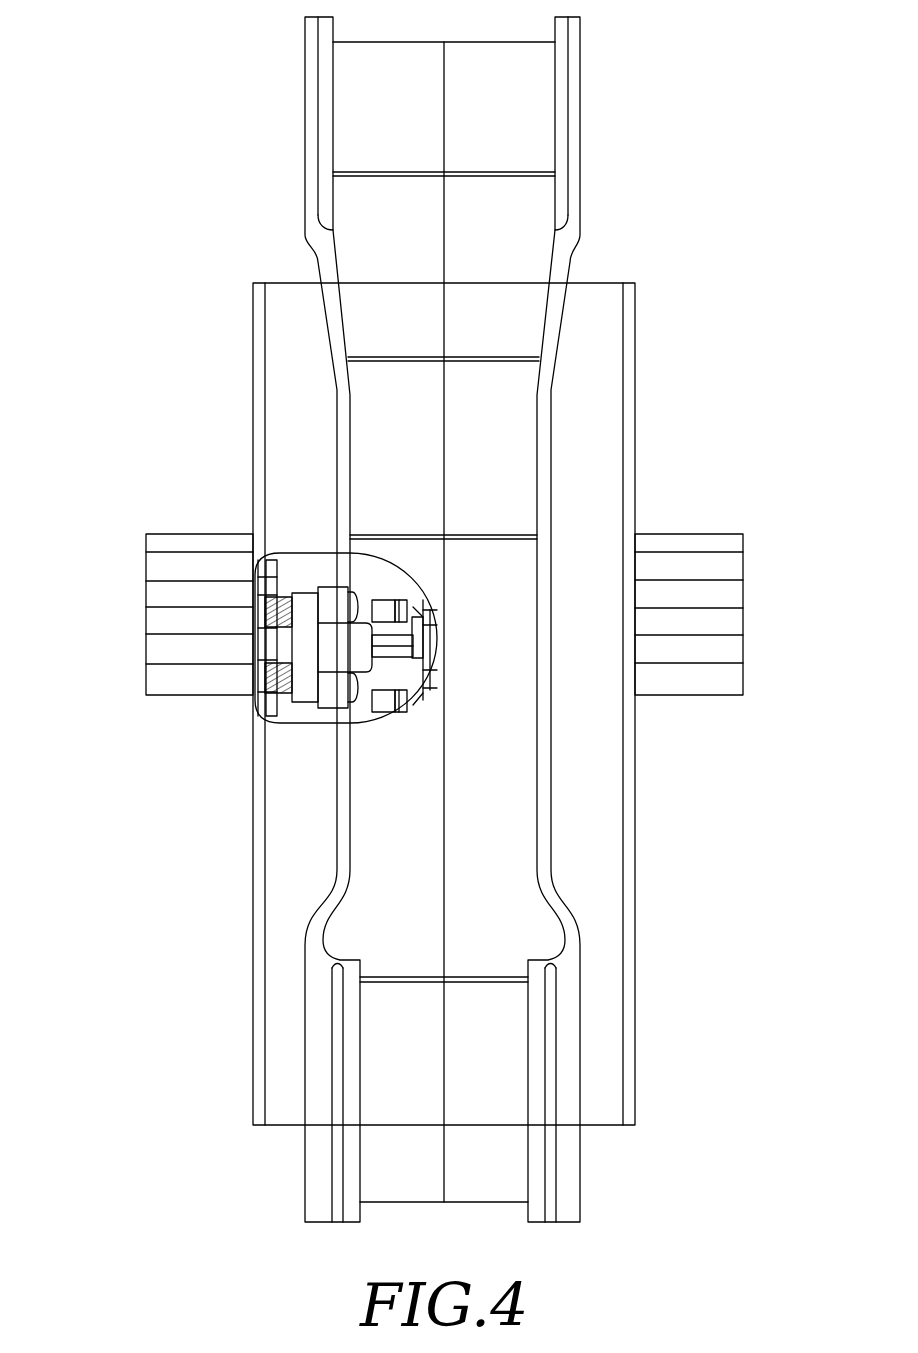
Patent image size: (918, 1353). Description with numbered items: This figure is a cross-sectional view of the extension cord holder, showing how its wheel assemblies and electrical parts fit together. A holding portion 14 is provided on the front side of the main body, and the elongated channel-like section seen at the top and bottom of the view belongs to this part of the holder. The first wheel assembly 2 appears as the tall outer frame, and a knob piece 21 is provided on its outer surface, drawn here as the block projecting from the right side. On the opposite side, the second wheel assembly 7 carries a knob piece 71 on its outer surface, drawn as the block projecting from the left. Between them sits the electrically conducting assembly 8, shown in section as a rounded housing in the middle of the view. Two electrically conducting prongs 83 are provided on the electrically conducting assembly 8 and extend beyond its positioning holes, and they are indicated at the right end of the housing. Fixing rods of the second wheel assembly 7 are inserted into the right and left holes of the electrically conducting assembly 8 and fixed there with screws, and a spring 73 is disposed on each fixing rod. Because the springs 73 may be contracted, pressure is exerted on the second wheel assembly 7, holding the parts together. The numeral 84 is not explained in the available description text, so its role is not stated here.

The first wheel assembly 2 is at (636, 1003).
The second wheel assembly 7 is at (254, 1052).
The electrically conducting assembly 8 is at (300, 706).
The holding portion 14 is at (510, 133).
The knob piece 21 is at (743, 570).
The knob piece 71 is at (146, 628).
The spring 73 is at (259, 702).
The electrically conducting prongs 83 is at (437, 615).
The nut 84 is at (350, 590).